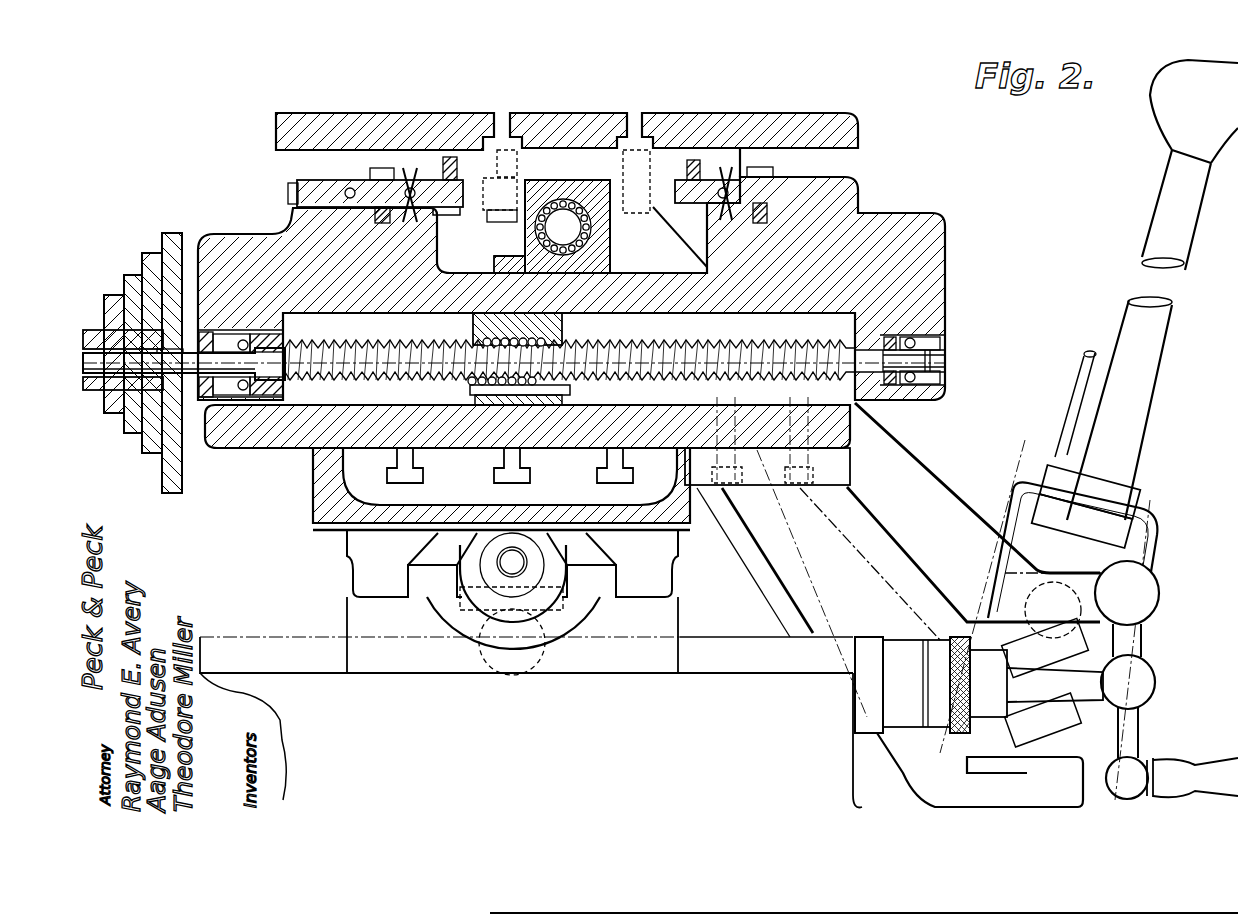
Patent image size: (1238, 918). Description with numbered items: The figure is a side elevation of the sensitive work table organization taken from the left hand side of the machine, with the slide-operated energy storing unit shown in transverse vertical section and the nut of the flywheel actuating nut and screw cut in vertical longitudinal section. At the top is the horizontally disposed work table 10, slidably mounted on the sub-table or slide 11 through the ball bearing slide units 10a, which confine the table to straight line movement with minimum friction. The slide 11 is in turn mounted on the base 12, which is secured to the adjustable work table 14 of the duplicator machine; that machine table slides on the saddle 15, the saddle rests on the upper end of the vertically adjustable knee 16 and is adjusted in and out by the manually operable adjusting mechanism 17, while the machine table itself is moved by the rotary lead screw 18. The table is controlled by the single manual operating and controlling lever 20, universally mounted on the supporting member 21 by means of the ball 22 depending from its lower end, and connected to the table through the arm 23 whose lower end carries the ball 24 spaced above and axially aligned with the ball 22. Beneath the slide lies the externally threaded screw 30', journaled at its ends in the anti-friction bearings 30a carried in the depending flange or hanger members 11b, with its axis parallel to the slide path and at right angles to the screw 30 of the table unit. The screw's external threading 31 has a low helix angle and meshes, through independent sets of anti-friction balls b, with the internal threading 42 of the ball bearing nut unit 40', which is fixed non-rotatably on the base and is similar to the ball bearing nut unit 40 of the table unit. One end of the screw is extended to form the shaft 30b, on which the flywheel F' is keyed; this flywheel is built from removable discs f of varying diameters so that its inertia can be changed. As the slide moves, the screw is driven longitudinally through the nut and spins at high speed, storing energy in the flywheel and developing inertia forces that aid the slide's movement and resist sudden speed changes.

The work table 10 is at (810, 112).
The ball bearing slide units 10a is at (410, 188).
The sub-table or slide 11 is at (870, 252).
The side depending flange or hanger members 11b is at (214, 250).
The base 12 is at (228, 445).
The adjustable work table of the duplicator machine 14 is at (340, 467).
The saddle 15 is at (356, 608).
The knee 16 is at (260, 650).
The adjusting mechanism 17 is at (1128, 746).
The rotary lead screw 18 is at (520, 566).
The manual operating and controlling lever 20 is at (1151, 179).
The supporting member 21 is at (778, 590).
The ball 22 is at (978, 624).
The arm 23 is at (940, 494).
The ball 24 is at (1069, 632).
The screw member 30 is at (570, 170).
The anti-friction bearings 30a is at (272, 340).
The shaft portion 30b is at (92, 345).
The externally threaded screw 30' is at (392, 346).
The external screw threading 31 is at (693, 342).
The ball bearing nut unit 40 is at (546, 178).
The ball bearing nut unit 40' is at (486, 262).
The internal threading 42 is at (543, 340).
The anti-friction balls b is at (592, 233).
The flywheel F' is at (162, 346).
The discs f is at (150, 256).